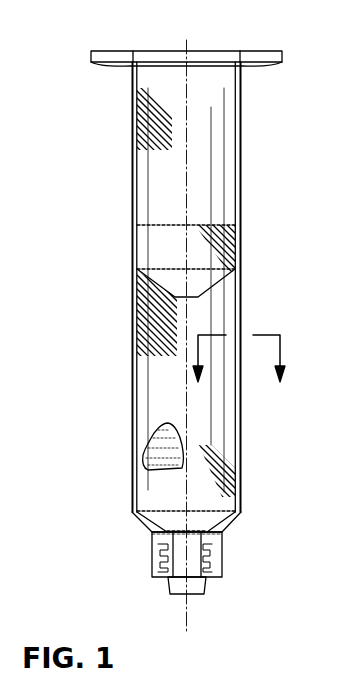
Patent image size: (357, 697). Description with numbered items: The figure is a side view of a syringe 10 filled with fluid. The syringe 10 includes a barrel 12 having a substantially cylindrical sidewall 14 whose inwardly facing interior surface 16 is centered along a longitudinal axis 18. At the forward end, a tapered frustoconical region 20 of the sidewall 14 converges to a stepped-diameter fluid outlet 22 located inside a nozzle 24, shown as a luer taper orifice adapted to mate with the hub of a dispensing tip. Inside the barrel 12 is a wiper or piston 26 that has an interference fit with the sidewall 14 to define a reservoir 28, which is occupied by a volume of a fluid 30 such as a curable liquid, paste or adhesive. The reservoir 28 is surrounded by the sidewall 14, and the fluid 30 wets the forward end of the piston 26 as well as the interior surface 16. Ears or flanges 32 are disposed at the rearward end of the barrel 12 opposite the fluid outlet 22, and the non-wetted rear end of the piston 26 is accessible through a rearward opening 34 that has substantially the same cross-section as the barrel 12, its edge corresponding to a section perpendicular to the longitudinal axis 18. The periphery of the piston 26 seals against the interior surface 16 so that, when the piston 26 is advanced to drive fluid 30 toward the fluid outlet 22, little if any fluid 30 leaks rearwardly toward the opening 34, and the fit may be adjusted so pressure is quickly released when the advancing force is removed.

The syringe 10 is at (85, 262).
The barrel 12 is at (128, 162).
The sidewall 14 is at (242, 171).
The interior surface 16 is at (235, 198).
The longitudinal axis 18 is at (190, 605).
The tapered frustoconical region 20 is at (227, 525).
The fluid outlet 22 is at (198, 560).
The nozzle 24 is at (167, 585).
The piston 26 is at (213, 289).
The reservoir 28 is at (218, 443).
The fluid 30 is at (150, 456).
The flanges 32 is at (91, 58).
The rearward opening 34 is at (238, 62).